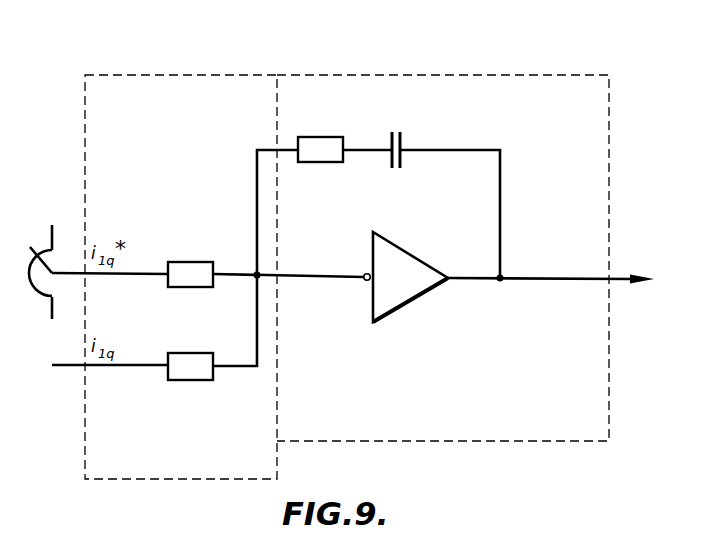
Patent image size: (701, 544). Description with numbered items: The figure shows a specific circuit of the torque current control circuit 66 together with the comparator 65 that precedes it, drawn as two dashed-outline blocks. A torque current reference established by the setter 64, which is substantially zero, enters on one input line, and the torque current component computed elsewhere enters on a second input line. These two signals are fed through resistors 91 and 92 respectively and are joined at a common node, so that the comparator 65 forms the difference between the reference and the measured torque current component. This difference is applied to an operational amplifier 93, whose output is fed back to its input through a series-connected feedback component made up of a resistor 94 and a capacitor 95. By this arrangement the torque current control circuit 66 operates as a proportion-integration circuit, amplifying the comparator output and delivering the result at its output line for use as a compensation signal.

The setter 64 is at (33, 278).
The comparator 65 is at (152, 481).
The torque current control circuit 66 is at (562, 75).
The resistor 91 is at (194, 266).
The resistor 92 is at (197, 381).
The operational amplifier 93 is at (418, 265).
The resistor 94 is at (326, 140).
The capacitor 95 is at (402, 138).